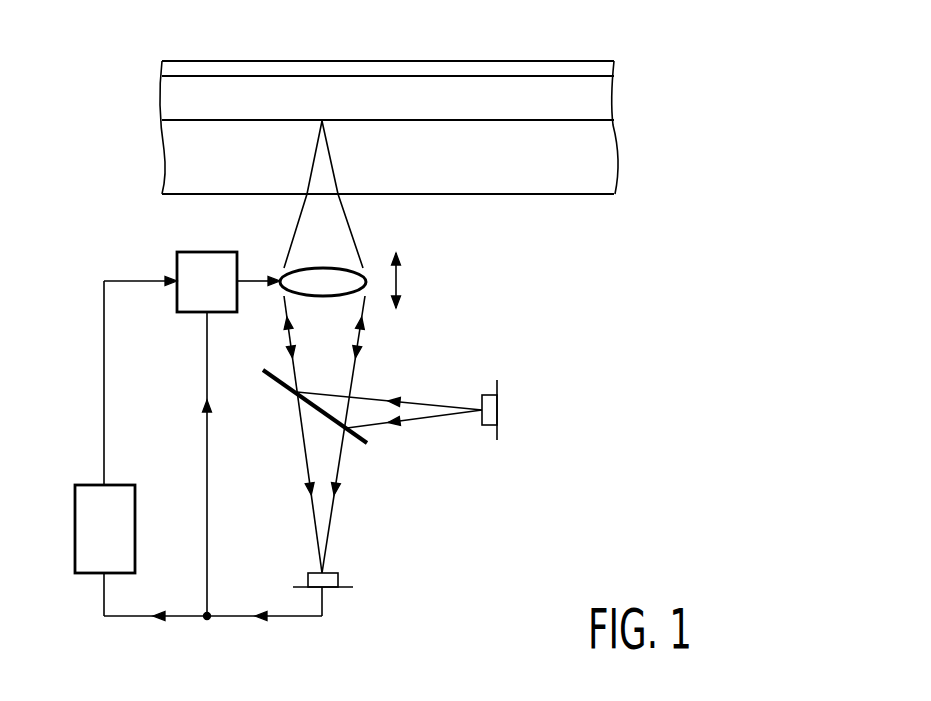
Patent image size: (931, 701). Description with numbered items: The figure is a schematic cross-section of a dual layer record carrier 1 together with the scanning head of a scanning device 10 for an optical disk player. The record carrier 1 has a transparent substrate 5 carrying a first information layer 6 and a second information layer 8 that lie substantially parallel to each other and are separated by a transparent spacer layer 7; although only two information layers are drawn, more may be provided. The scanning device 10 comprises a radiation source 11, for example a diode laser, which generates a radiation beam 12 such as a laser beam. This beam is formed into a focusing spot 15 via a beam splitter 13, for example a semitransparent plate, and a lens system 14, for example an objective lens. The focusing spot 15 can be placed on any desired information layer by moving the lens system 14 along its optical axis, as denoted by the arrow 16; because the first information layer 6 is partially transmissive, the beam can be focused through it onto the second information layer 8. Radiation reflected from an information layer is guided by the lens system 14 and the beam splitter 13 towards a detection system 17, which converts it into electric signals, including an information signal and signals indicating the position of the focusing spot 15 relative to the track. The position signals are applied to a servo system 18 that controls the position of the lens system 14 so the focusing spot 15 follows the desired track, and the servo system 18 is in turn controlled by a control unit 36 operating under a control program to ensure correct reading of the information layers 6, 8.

The dual layer record carrier 1 is at (666, 28).
The transparent substrate 5 is at (607, 164).
The first information layer 6 is at (612, 123).
The transparent spacer layer 7 is at (607, 100).
The second information layer 8 is at (613, 73).
The scanning device 10 is at (576, 347).
The radiation source 11 is at (503, 410).
The radiation beam 12 is at (413, 412).
The beam splitter 13 is at (278, 383).
The lens system 14 is at (297, 295).
The focusing spot 15 is at (322, 121).
The arrow 16 is at (406, 283).
The detection system 17 is at (332, 590).
The servo system 18 is at (177, 263).
The control unit 36 is at (75, 527).